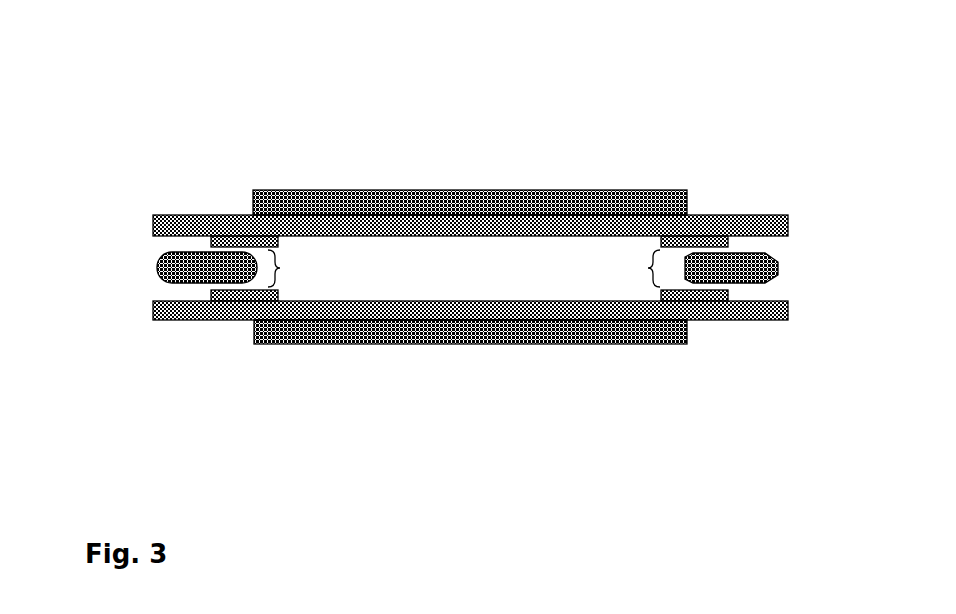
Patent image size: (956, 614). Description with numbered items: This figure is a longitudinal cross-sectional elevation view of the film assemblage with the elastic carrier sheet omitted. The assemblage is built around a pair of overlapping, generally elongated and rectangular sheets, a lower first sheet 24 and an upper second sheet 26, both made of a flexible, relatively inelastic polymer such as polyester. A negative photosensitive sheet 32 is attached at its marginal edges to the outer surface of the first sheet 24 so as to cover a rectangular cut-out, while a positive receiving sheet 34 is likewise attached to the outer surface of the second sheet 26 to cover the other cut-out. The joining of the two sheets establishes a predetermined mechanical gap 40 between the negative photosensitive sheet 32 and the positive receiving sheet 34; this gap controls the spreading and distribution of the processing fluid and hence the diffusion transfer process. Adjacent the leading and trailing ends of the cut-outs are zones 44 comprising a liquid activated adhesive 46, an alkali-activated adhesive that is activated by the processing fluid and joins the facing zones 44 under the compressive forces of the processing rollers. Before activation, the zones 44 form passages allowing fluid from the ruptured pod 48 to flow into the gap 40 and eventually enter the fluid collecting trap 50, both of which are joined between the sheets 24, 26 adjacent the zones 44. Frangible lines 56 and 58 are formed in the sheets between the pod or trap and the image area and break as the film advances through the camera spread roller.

The first sheet 24 is at (177, 312).
The second sheet 26 is at (163, 216).
The negative photosensitive sheet 32 is at (490, 344).
The positive receiving sheet 34 is at (498, 190).
The mechanical gap 40 is at (647, 269).
The zone 44 is at (668, 344).
The liquid activated adhesive 46 is at (668, 344).
The pod 48 is at (777, 274).
The fluid collecting trap 50 is at (157, 267).
The frangible line 56 is at (689, 237).
The frangible line 58 is at (240, 237).